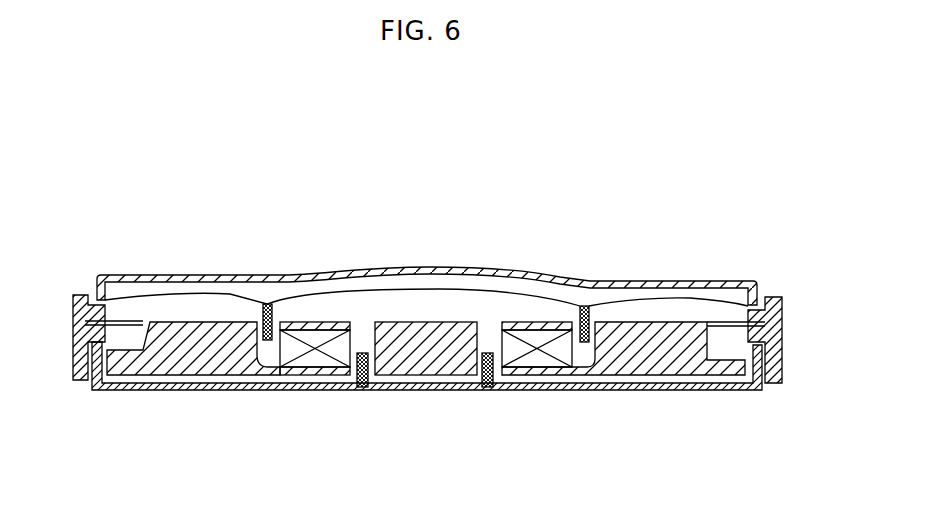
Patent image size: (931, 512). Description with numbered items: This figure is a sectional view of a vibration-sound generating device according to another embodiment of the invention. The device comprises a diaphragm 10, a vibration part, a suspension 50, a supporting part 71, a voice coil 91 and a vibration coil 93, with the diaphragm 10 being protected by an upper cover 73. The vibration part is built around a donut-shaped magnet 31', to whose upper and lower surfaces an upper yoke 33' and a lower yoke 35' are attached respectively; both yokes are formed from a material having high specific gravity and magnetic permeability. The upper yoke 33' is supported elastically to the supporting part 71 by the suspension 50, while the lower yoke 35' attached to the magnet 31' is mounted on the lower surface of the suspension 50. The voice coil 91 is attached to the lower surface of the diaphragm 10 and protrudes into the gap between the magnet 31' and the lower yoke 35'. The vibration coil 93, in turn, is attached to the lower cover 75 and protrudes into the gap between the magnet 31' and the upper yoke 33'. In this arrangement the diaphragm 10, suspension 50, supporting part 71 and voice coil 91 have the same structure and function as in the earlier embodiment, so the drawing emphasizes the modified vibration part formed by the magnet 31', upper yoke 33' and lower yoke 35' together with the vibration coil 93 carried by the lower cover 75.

The diaphragm 10 is at (652, 298).
The magnet 31' is at (298, 397).
The upper yoke 33' is at (425, 284).
The lower yoke 35' is at (426, 402).
The suspension 50 is at (146, 320).
The supporting part 71 is at (782, 298).
The upper cover 73 is at (226, 277).
The lower cover 75 is at (389, 389).
The voice coil 91 is at (587, 306).
The vibration coil 93 is at (481, 389).